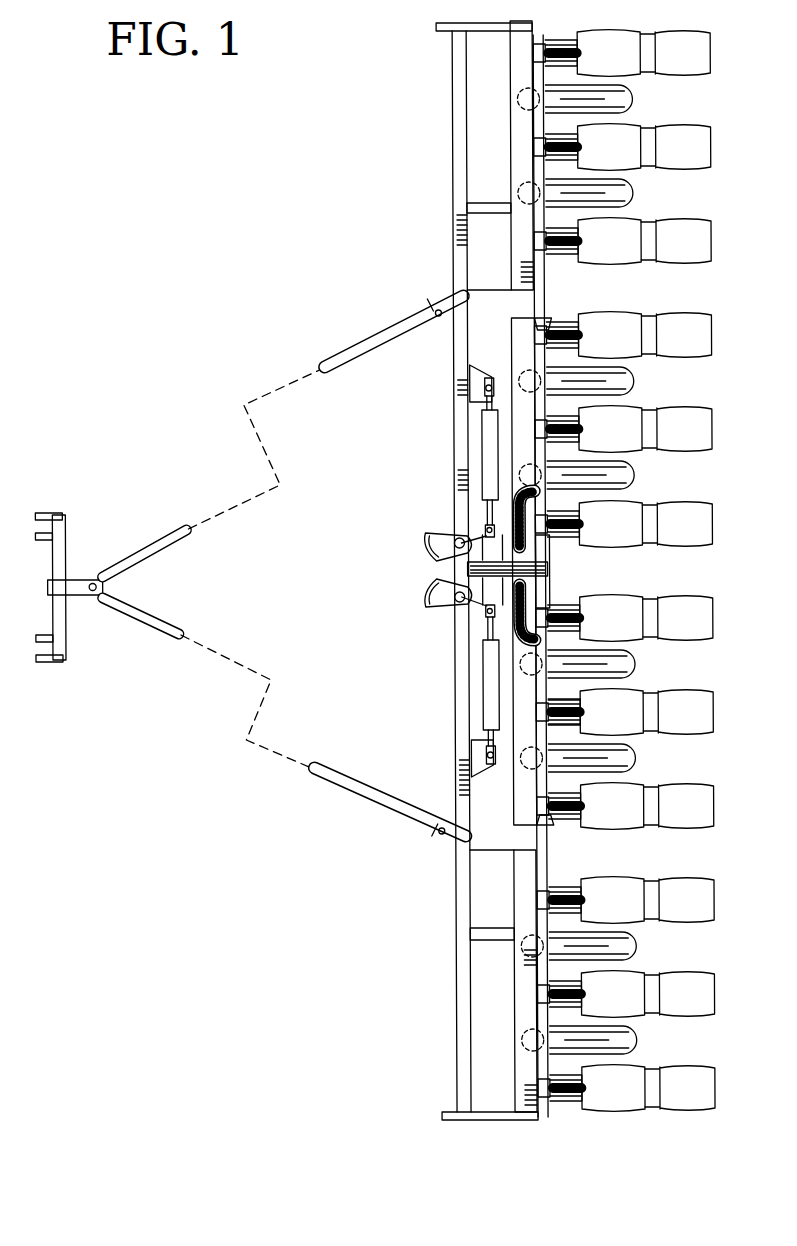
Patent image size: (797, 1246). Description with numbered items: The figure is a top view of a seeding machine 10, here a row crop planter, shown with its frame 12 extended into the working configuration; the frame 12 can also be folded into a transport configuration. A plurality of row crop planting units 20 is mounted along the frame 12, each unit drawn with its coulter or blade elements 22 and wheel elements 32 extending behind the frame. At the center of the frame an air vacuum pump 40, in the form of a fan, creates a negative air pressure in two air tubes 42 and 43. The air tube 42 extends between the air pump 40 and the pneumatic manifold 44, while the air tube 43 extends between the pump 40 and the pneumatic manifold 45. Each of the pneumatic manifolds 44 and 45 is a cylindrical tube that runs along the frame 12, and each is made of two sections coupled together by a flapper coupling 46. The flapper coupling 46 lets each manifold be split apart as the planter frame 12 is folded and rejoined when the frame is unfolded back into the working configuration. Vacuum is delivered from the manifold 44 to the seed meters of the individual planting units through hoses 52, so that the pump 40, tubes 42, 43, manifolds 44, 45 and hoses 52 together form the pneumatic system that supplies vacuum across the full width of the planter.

The seeding machine 10 is at (229, 258).
The frame 12 is at (451, 402).
The row crop planting units 20 is at (722, 510).
The coulter blade 22 is at (636, 126).
The press wheel 32 is at (707, 128).
The air vacuum pump 40 is at (455, 602).
The air tube 42 is at (479, 492).
The air tube 43 is at (511, 640).
The pneumatic manifold 44 is at (602, 456).
The pneumatic manifold 45 is at (614, 687).
The flapper coupling 46 is at (549, 326).
The hose 52 is at (535, 150).